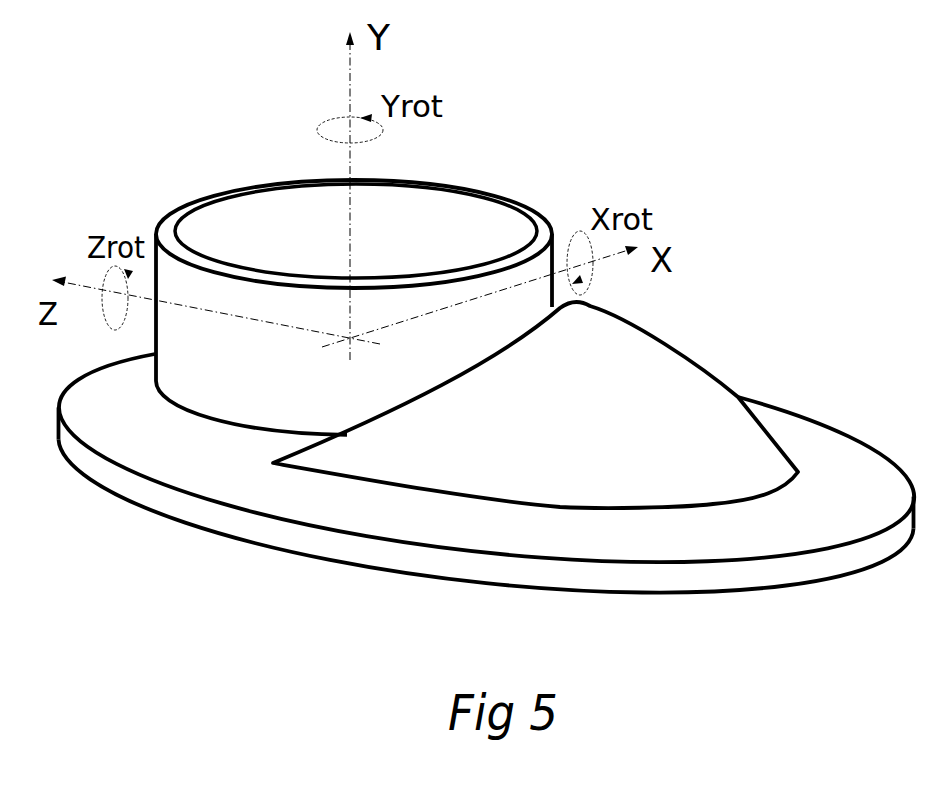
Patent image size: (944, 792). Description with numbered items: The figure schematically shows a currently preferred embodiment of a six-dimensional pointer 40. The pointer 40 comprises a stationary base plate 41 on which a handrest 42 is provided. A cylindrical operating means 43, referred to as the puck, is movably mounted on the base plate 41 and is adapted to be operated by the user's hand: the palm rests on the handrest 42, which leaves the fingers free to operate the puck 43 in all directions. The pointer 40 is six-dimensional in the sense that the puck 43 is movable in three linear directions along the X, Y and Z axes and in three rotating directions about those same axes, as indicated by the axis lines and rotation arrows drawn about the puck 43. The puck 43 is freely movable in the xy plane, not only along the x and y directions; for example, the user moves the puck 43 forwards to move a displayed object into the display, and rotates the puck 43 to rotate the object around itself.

The six-dimensional pointer 40 is at (487, 345).
The stationary base plate 41 is at (808, 415).
The handrest 42 is at (650, 327).
The cylindrical operating means 43 is at (462, 175).